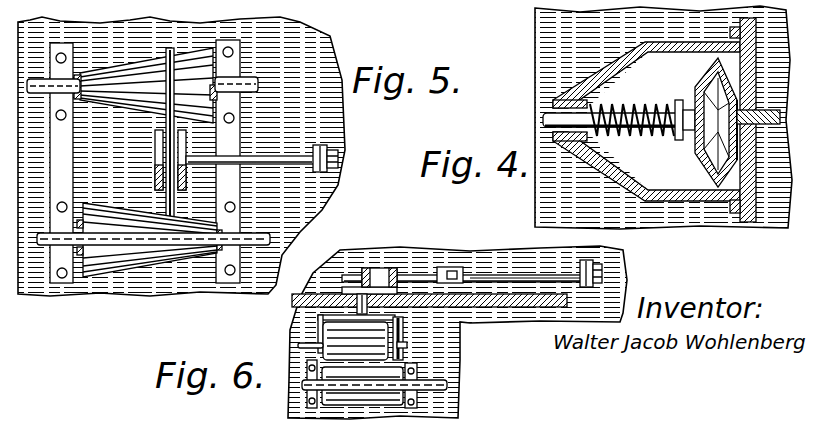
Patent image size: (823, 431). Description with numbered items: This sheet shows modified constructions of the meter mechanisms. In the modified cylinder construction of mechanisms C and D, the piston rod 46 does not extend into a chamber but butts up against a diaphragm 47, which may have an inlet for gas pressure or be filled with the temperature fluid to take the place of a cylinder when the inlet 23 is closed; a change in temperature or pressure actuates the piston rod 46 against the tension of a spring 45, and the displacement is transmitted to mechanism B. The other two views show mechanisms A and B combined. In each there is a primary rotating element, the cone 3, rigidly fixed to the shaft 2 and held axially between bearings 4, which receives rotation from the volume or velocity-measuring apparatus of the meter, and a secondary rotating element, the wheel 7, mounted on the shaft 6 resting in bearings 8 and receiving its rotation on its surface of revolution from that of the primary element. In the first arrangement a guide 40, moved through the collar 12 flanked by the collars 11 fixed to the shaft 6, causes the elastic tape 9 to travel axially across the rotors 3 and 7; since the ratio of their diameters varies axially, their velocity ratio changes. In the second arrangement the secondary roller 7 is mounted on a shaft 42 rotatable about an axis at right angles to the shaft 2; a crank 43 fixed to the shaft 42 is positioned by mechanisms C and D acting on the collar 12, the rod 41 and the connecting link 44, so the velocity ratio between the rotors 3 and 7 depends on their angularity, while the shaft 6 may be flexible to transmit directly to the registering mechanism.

In FIG. 5, the shaft 2 is at (244, 238).
In FIG. 6, the shaft 2 is at (425, 387).
In FIG. 5, the cone 3 is at (137, 248).
In FIG. 6, the cone 3 is at (385, 396).
In FIG. 5, the bearings 4 is at (62, 248).
In FIG. 6, the bearings 4 is at (418, 392).
In FIG. 5, the shaft 6 is at (44, 80).
In FIG. 6, the shaft 6 is at (299, 343).
In FIG. 5, the wheel 7 is at (100, 78).
In FIG. 6, the wheel 7 is at (378, 358).
In FIG. 5, the bearings 8 is at (60, 96).
In FIG. 6, the bearings 8 is at (400, 338).
In FIG. 5, the elastic tape 9 is at (172, 66).
In FIG. 6, the elastic tape 9 is at (404, 320).
In FIG. 5, the collars 11 is at (318, 146).
In FIG. 6, the collars 11 is at (594, 263).
In FIG. 5, the collar 12 is at (335, 150).
In FIG. 6, the collar 12 is at (622, 273).
In FIG. 4, the inlet 23 is at (758, 122).
In FIG. 5, the guide 40 is at (184, 159).
In FIG. 5, the rod 41 is at (263, 157).
In FIG. 6, the rod 41 is at (540, 273).
In FIG. 6, the shaft 42 is at (362, 290).
In FIG. 6, the crank 43 is at (375, 276).
In FIG. 6, the connecting link 44 is at (412, 275).
In FIG. 4, the spring 45 is at (592, 100).
In FIG. 4, the piston rod 46 is at (697, 98).
In FIG. 4, the diaphragm 47 is at (720, 108).